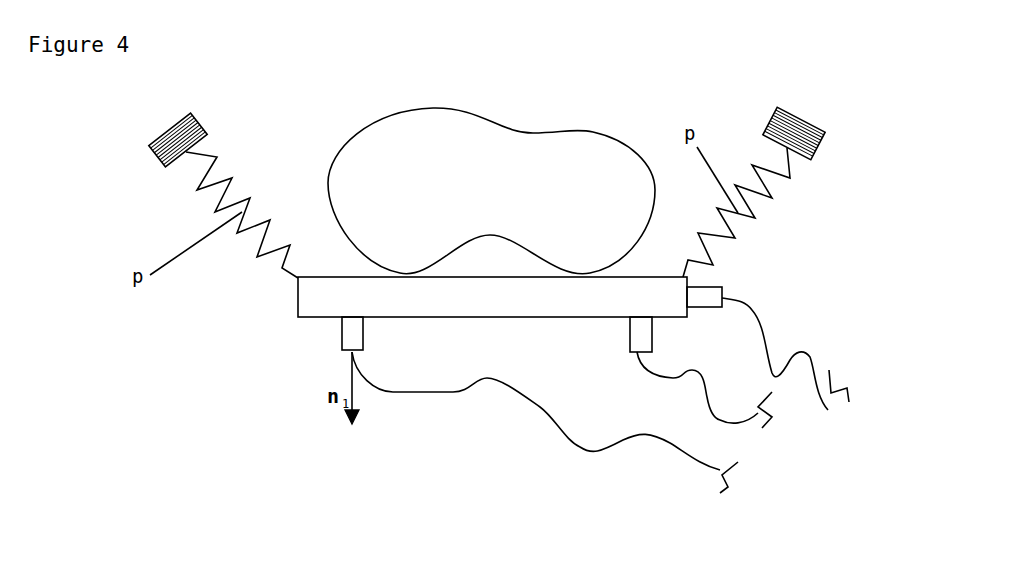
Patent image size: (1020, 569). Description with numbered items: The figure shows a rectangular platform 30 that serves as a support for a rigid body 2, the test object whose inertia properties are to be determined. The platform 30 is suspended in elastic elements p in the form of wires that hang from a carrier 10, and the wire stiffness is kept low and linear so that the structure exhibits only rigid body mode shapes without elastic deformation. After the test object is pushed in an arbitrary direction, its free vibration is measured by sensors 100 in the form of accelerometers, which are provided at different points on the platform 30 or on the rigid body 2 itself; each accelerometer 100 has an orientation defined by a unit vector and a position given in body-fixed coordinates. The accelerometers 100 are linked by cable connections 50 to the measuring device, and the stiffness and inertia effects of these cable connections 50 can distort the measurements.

The rigid body 2 is at (378, 173).
The carrier 10 is at (153, 147).
The platform 30 is at (323, 296).
The cable connections 50 is at (523, 393).
The sensors 100 is at (353, 330).